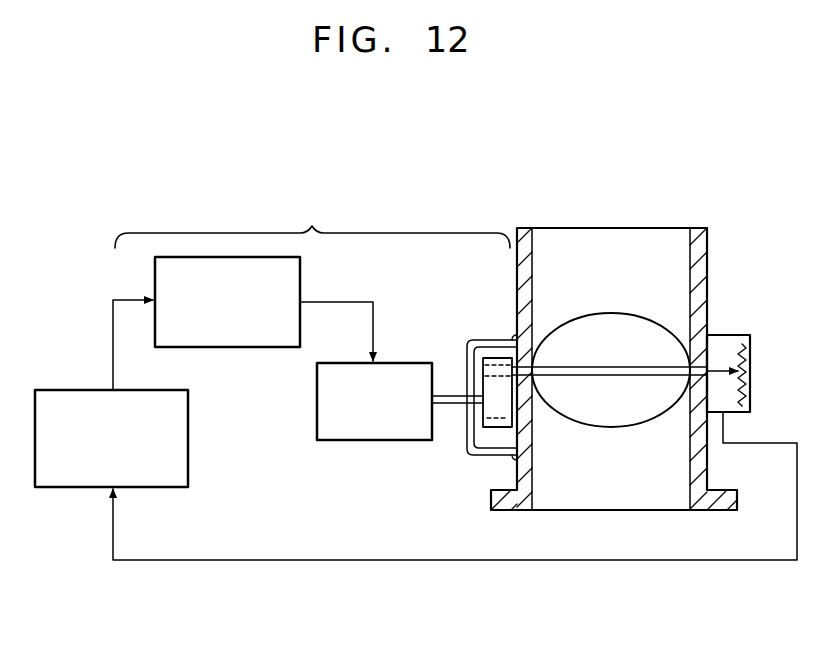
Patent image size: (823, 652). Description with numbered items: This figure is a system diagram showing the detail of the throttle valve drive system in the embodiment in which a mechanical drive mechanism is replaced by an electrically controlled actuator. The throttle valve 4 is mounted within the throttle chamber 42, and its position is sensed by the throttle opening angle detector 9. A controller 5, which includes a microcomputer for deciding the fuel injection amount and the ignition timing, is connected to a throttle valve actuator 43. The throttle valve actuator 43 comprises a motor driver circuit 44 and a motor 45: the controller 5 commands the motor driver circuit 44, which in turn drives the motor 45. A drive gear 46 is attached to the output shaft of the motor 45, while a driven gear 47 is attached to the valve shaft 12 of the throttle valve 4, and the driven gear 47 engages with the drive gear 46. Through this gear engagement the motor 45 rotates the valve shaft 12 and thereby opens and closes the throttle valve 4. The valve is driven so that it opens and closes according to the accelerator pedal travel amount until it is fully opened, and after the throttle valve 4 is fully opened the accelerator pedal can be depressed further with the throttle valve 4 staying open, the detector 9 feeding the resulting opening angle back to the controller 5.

The throttle valve 4 is at (615, 313).
The controller 5 is at (70, 390).
The throttle opening angle detector 9 is at (730, 335).
The valve shaft 12 is at (606, 380).
The throttle chamber 42 is at (705, 243).
The throttle valve actuator 43 is at (337, 209).
The motor driver circuit 44 is at (241, 347).
The motor 45 is at (322, 440).
The drive gear 46 is at (482, 447).
The driven gear 47 is at (494, 358).